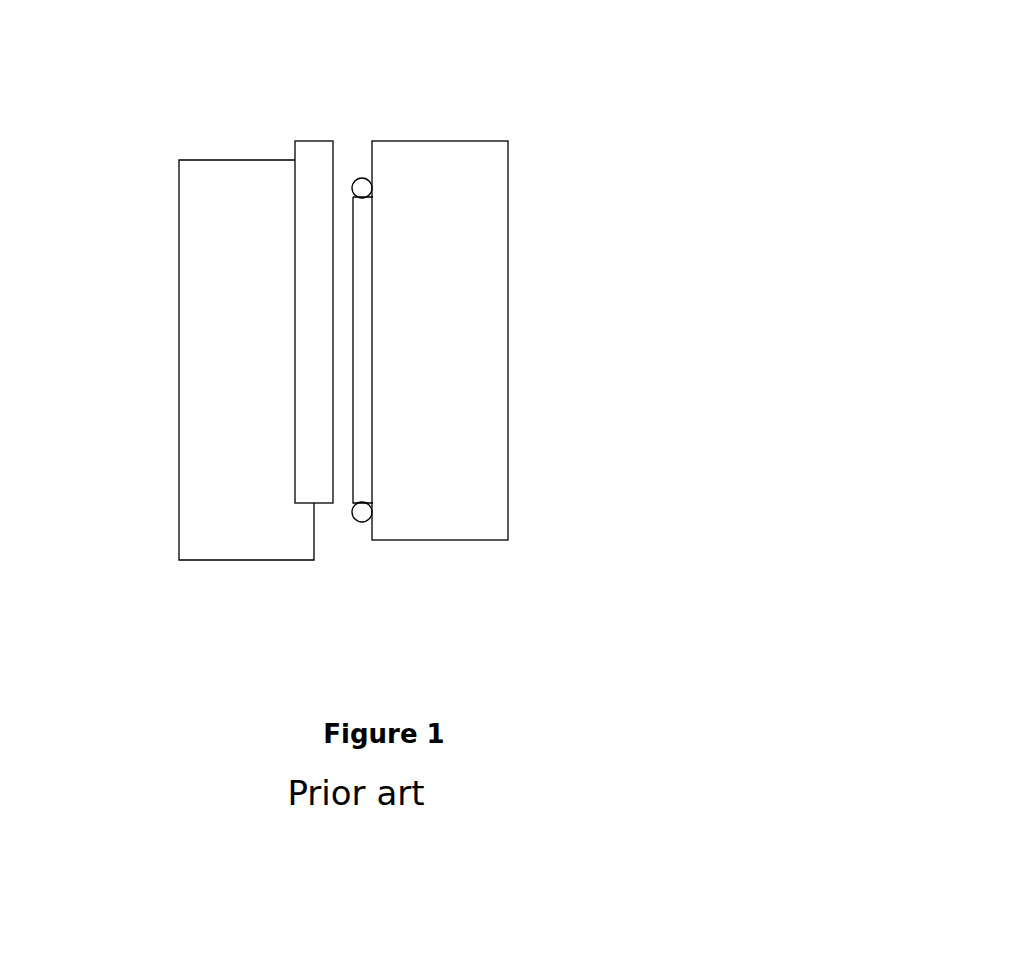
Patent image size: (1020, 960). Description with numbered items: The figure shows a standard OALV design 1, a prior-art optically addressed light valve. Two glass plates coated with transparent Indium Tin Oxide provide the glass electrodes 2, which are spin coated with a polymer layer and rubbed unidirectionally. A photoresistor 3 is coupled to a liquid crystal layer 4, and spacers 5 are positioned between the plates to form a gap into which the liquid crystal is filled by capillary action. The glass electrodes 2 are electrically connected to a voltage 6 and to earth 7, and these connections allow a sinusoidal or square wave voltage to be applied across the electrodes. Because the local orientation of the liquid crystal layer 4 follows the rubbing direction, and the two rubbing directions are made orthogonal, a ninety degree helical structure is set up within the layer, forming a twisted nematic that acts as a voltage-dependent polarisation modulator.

The standard OALV design 1 is at (583, 120).
The glass electrodes 2 is at (412, 273).
The photoresistor 3 is at (333, 390).
The liquid crystal layer 4 is at (352, 447).
The spacers 5 is at (362, 502).
The voltage 6 is at (316, 160).
The earth 7 is at (369, 150).